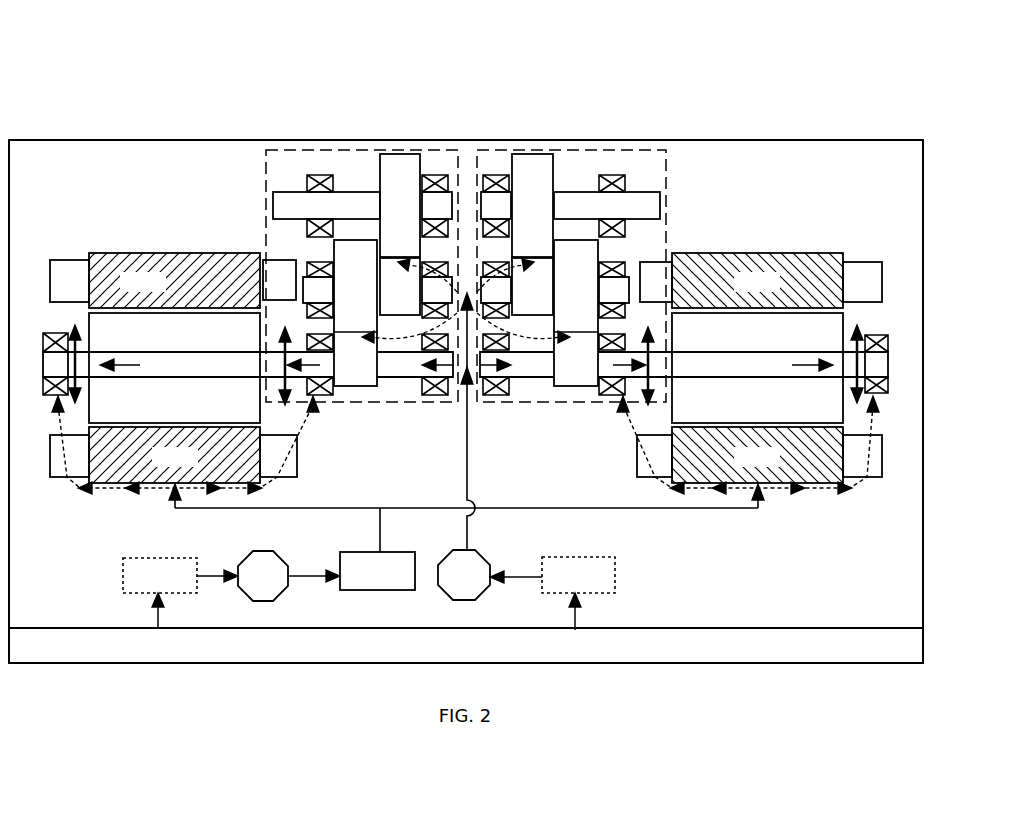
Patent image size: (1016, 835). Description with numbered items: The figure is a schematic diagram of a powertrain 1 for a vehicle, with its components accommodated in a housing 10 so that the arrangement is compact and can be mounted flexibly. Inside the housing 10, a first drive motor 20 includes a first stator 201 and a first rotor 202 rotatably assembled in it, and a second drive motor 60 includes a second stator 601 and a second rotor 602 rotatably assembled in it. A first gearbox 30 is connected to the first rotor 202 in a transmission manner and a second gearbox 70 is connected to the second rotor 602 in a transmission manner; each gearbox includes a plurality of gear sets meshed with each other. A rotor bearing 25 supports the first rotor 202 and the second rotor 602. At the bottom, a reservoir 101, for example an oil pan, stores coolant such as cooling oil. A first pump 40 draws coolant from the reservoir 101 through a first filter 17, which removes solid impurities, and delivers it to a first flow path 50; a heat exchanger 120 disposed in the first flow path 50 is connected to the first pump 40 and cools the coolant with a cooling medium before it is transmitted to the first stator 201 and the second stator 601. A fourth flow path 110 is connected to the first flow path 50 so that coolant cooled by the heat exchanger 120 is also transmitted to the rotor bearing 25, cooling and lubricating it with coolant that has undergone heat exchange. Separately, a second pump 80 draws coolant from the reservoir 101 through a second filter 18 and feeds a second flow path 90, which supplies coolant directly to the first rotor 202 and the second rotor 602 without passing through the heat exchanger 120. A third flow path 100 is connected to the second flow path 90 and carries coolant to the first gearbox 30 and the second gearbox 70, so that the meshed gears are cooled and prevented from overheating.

The powertrain 1 is at (136, 55).
The housing 10 is at (768, 140).
The first filter 17 is at (180, 593).
The second filter 18 is at (552, 593).
The first drive motor 20 is at (181, 232).
The rotor bearing 25 is at (43, 329).
The first gearbox 30 is at (332, 148).
The first pump 40 is at (289, 576).
The first flow path 50 is at (268, 510).
The second drive motor 60 is at (756, 232).
The second gearbox 70 is at (587, 148).
The second pump 80 is at (464, 575).
The second flow path 90 is at (467, 486).
The third flow path 100 is at (545, 338).
The reservoir 101 is at (466, 645).
The fourth flow path 110 is at (63, 457).
The heat exchanger 120 is at (377, 571).
The first stator 201 is at (174, 368).
The first rotor 202 is at (201, 368).
The second stator 601 is at (757, 368).
The second rotor 602 is at (731, 368).